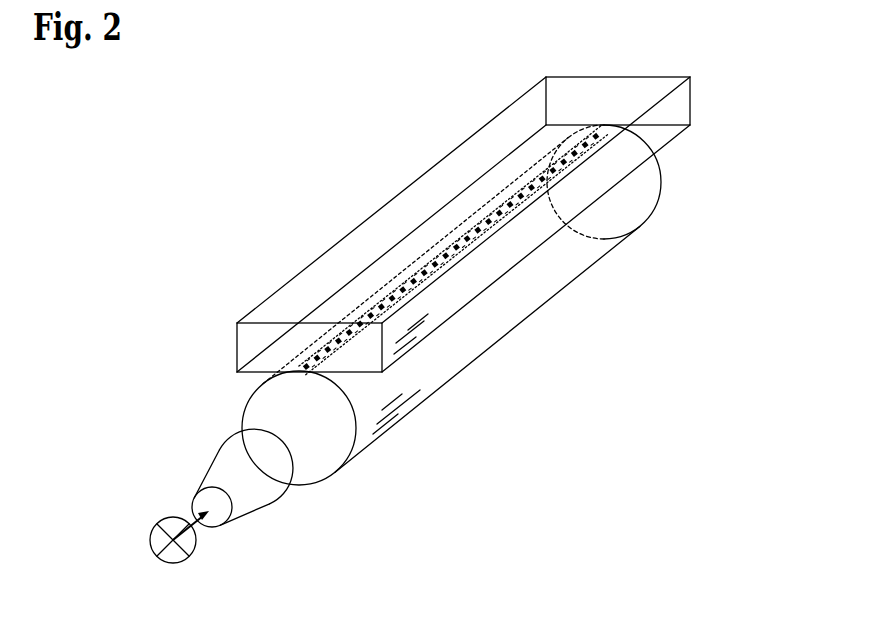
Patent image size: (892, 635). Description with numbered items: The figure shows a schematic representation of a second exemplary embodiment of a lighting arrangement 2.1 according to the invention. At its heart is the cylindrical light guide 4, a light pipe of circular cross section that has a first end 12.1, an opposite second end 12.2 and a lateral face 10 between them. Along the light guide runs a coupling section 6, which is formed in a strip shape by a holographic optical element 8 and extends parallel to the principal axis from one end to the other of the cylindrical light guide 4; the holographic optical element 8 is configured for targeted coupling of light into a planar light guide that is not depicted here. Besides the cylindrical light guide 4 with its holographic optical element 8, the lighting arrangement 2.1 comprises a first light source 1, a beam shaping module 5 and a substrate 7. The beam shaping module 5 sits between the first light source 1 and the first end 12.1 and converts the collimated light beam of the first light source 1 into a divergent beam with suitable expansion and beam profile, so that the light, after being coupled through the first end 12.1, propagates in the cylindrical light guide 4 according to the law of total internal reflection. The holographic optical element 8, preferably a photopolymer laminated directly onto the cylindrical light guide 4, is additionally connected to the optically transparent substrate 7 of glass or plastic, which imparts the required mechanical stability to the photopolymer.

The lighting arrangement 2.1 is at (292, 160).
The first light source 1 is at (157, 520).
The cylindrical light guide 4 is at (259, 426).
The beam shaping module 5 is at (217, 473).
The coupling section 6 is at (408, 270).
The substrate 7 is at (240, 321).
The holographic optical element 8 is at (470, 238).
The lateral face 10 is at (453, 305).
The first end 12.1 is at (327, 442).
The second end 12.2 is at (637, 186).